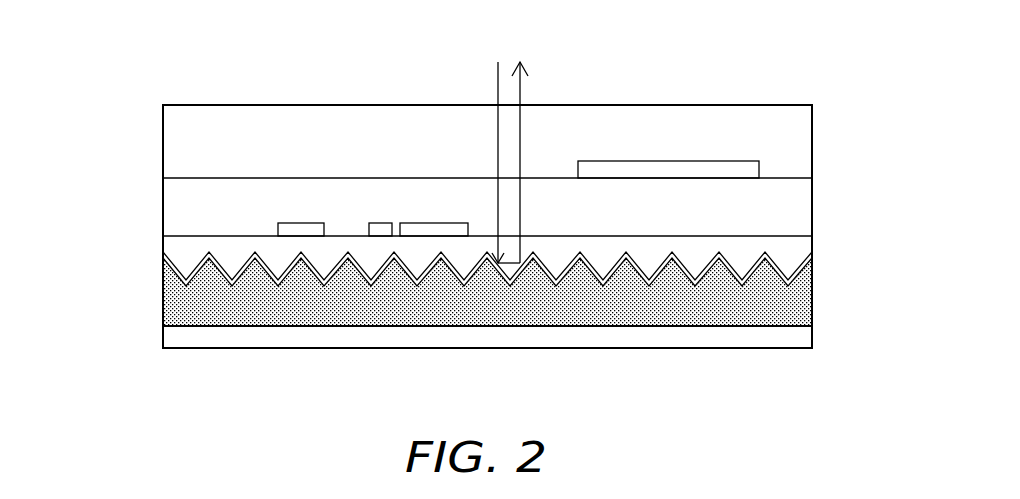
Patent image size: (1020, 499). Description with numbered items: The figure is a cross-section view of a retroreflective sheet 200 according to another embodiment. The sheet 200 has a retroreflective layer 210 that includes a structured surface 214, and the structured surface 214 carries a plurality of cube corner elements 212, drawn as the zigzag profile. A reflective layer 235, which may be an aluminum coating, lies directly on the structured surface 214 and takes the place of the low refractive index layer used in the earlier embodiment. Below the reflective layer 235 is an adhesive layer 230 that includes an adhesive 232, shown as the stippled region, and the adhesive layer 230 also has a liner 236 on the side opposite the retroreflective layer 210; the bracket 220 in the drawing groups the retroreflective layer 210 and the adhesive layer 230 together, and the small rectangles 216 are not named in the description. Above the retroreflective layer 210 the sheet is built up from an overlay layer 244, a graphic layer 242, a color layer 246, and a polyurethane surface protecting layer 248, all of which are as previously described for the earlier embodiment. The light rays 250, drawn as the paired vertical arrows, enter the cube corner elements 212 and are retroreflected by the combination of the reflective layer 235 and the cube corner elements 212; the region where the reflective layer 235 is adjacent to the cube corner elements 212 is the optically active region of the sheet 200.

The retroreflective sheet 200 is at (770, 68).
The retroreflective layer 210 is at (157, 238).
The cube corner elements 212 is at (553, 250).
The structured surface 214 is at (335, 268).
The electrode 216 is at (343, 236).
The substrate assembly 220 is at (100, 238).
The adhesive layer 230 is at (157, 282).
The adhesive 232 is at (793, 309).
The reflective layer 235 is at (603, 277).
The liner 236 is at (793, 344).
The graphic layer 242 is at (295, 228).
The overlay layer 244 is at (793, 212).
The color layer 246 is at (680, 170).
The polyurethane surface protecting layer 248 is at (793, 148).
The light rays 250 is at (497, 80).